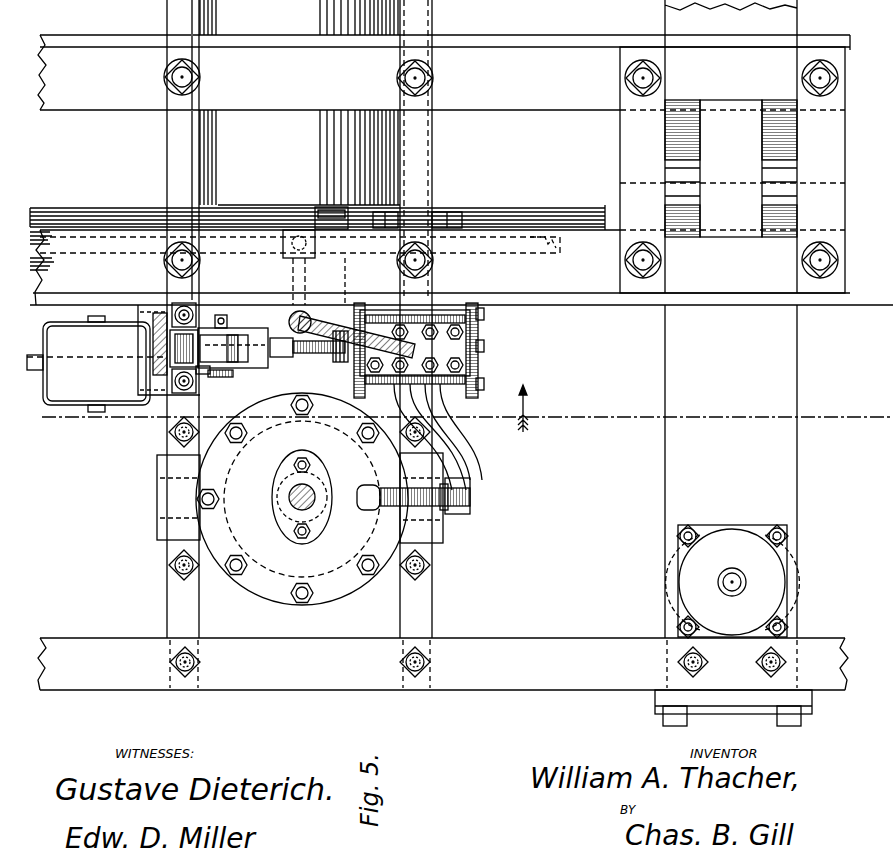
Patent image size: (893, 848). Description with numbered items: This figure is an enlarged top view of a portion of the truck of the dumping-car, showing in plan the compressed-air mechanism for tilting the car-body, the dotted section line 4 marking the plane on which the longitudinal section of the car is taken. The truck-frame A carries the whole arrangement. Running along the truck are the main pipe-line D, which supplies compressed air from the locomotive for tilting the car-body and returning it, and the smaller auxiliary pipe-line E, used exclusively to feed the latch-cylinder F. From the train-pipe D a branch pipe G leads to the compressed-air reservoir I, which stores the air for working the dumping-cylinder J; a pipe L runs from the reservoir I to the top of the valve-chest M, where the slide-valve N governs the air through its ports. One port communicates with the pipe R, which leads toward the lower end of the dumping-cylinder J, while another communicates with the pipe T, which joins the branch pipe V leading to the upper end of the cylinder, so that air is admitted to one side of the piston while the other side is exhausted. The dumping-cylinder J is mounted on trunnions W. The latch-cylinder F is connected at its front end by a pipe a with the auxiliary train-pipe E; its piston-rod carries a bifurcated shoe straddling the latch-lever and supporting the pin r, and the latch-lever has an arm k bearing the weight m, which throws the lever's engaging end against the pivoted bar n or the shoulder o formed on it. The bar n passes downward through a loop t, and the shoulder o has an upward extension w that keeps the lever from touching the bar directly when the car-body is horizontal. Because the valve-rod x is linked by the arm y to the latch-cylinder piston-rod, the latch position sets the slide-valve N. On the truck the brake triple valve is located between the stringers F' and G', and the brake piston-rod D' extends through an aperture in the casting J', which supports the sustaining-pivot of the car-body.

The truck-frame A is at (443, 669).
The pipe L is at (300, 152).
The auxiliary pipe-line E is at (508, 190).
The branch pipe G is at (359, 204).
The main pipe-line D is at (461, 267).
The piston-rod D' is at (38, 251).
The stringer F' is at (558, 253).
The stringer G' is at (702, 342).
The casting J' is at (731, 168).
The section line 4 4 is at (464, 408).
The weight m is at (96, 364).
The arm k is at (43, 345).
The bracket u is at (168, 368).
The loop t is at (150, 325).
The bar n is at (158, 303).
The shoulder o is at (202, 376).
The pin r is at (228, 380).
The valve-rod x is at (322, 356).
The upward extension w is at (306, 356).
The pipe a is at (330, 305).
The arm y is at (292, 318).
The slide-valve N is at (415, 347).
The latch-cylinder F is at (426, 350).
The pipe R is at (450, 440).
The pipe T is at (470, 458).
The trunnions W is at (289, 498).
The dumping-cylinder J is at (302, 499).
The compressed-air reservoir I is at (292, 490).
The branch pipe V is at (366, 488).
The valve-chest M is at (450, 514).